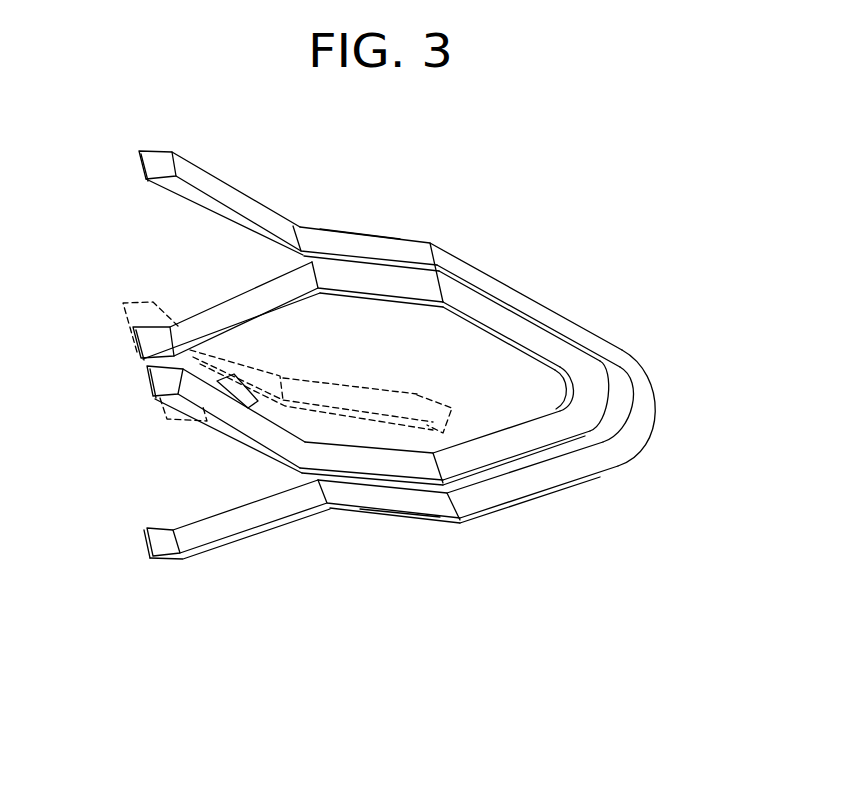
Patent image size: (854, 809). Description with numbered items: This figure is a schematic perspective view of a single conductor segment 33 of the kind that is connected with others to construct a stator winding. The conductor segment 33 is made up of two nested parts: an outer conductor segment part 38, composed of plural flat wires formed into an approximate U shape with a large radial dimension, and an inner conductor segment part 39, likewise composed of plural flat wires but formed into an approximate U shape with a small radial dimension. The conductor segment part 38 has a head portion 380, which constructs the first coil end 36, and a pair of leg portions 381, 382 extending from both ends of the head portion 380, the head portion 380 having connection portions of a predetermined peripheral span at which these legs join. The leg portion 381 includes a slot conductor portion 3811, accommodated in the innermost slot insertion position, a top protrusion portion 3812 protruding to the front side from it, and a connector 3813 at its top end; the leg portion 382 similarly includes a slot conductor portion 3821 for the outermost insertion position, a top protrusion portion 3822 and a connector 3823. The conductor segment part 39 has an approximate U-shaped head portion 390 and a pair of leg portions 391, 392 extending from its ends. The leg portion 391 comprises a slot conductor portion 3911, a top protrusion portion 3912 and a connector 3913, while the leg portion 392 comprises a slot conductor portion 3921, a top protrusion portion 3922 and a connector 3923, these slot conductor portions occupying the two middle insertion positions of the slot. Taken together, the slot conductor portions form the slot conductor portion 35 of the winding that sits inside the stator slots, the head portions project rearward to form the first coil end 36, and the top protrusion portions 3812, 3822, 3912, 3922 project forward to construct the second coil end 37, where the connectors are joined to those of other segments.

The conductor segment 33 is at (538, 592).
The slot conductor portion 35 is at (351, 226).
The coil end 36 is at (563, 296).
The coil end 37 is at (203, 567).
The conductor segment part 38 is at (607, 486).
The conductor segment part 39 is at (262, 279).
The head portion 380 is at (640, 422).
The leg portion 381 is at (344, 507).
The leg portion 382 is at (250, 196).
The head portion 390 is at (590, 397).
The leg portion 391 is at (278, 456).
The leg portion 392 is at (296, 307).
The slot conductor portion 3811 is at (373, 503).
The top protrusion portion 3812 is at (264, 521).
The connector 3813 is at (167, 547).
The slot conductor portion 3821 is at (372, 244).
The top protrusion portion 3822 is at (268, 217).
The connector 3823 is at (155, 162).
The slot conductor portion 3911 is at (402, 468).
The top protrusion portion 3912 is at (255, 441).
The connector 3913 is at (150, 378).
The slot conductor portion 3921 is at (413, 283).
The top protrusion portion 3922 is at (233, 300).
The connector 3923 is at (130, 342).